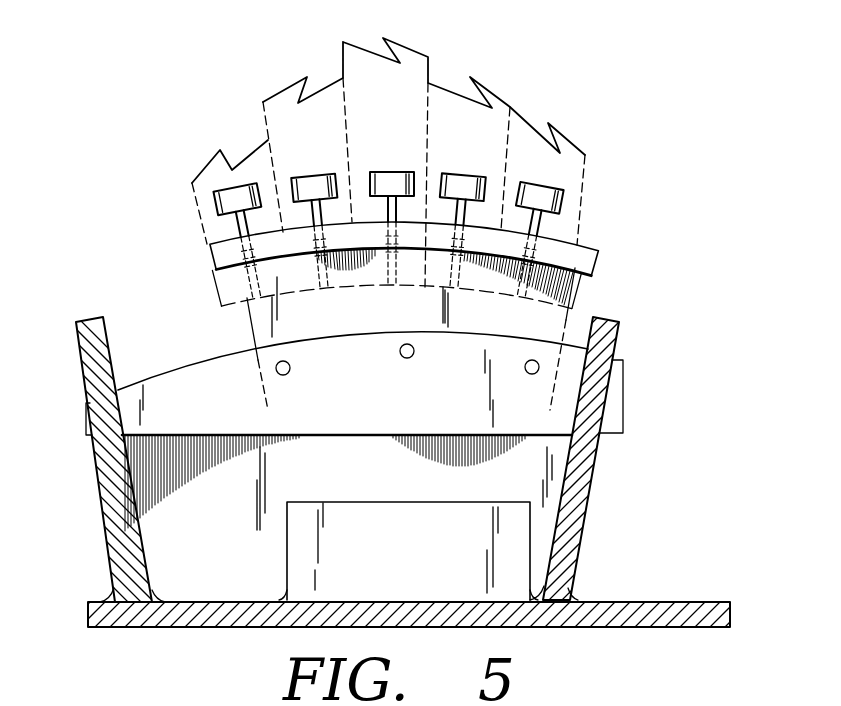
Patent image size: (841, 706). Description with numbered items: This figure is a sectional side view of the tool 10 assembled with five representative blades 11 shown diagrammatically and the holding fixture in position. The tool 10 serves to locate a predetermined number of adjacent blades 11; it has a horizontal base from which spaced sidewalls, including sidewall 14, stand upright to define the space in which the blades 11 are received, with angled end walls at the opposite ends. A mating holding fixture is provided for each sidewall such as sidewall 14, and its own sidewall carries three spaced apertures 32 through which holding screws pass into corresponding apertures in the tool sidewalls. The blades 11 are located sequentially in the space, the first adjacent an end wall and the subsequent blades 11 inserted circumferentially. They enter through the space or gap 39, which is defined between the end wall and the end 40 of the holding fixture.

The tool 10 is at (632, 335).
The blades 11 is at (215, 165).
The sidewall 14 is at (183, 366).
The aperture 32 is at (285, 375).
The space or gap 39 is at (160, 343).
The end of the holding fixture 40 is at (213, 258).